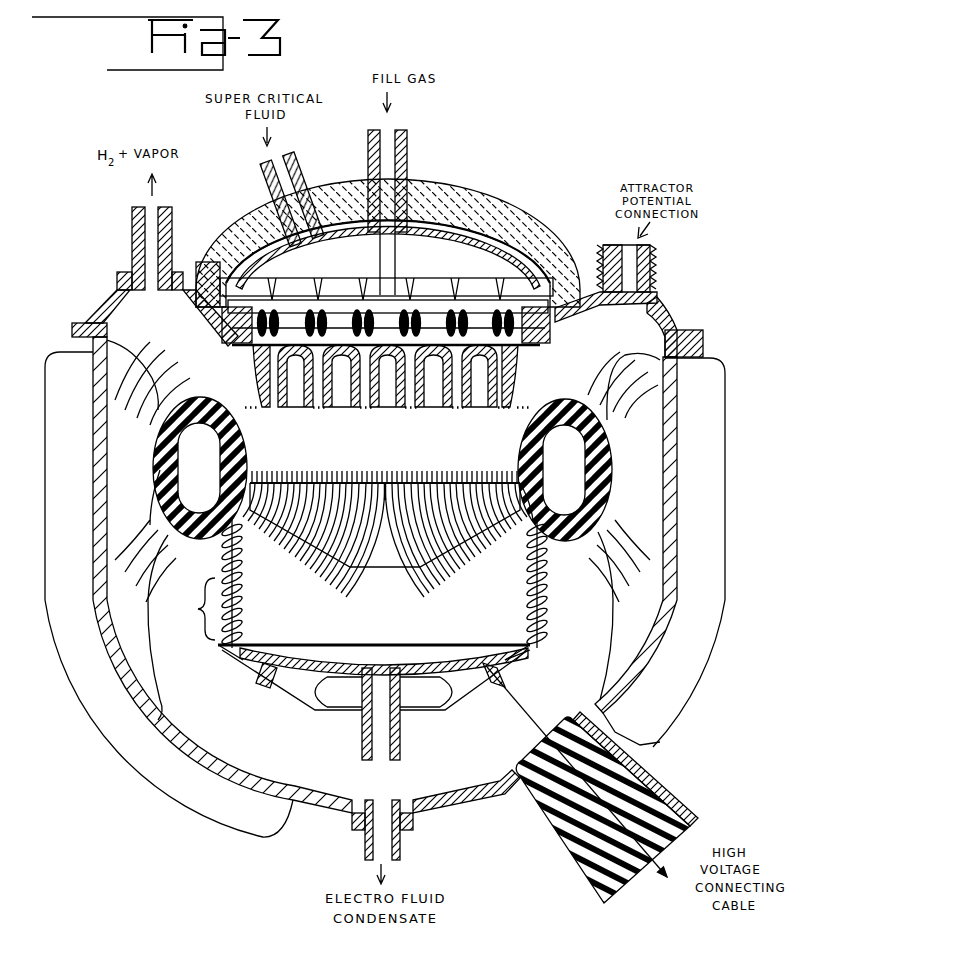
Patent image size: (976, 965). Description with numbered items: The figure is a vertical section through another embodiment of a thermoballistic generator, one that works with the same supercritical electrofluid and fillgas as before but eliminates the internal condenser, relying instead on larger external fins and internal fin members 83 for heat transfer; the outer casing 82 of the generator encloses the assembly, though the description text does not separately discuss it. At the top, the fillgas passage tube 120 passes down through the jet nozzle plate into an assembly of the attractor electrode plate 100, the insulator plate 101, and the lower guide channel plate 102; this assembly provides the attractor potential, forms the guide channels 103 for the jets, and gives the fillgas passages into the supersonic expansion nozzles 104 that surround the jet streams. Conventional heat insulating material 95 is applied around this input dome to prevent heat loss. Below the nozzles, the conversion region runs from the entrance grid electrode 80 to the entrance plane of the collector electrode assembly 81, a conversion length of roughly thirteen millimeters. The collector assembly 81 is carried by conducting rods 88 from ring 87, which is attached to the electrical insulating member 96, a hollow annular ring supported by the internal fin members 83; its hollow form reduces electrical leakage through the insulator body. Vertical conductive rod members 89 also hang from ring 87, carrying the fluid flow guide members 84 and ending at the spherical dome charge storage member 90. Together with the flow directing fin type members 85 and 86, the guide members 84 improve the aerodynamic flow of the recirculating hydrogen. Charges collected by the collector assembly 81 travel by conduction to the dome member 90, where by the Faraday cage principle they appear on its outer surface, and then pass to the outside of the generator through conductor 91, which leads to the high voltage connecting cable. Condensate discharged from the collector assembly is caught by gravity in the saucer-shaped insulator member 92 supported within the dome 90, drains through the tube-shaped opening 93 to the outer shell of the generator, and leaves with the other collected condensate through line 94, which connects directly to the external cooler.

The entrance grid electrode 80 is at (336, 412).
The collector electrode assembly 81 is at (405, 480).
The outer casing 82 is at (52, 640).
The internal fin members 83 is at (170, 688).
The fluid flow guide members 84 is at (198, 609).
The flow directing fin type member 85 is at (142, 582).
The flow directing fin type member 86 is at (160, 352).
The ring 87 is at (520, 535).
The conducting rods 88 is at (348, 483).
The vertical conductive rod members 89 is at (244, 606).
The spherical dome charge storage member 90 is at (527, 660).
The conductor 91 is at (518, 718).
The saucer-shaped insulator member 92 is at (360, 650).
The tube-shaped opening 93 is at (362, 734).
The line 94 is at (362, 846).
The heat insulating material 95 is at (478, 212).
The electrical insulating member 96 is at (605, 488).
The attractor electrode plate 100 is at (480, 314).
The insulator plate 101 is at (500, 314).
The lower guide channel plate 102 is at (430, 330).
The guide channels 103 is at (312, 330).
The supersonic expansion nozzles 104 is at (272, 392).
The fillgas passage tube 120 is at (396, 268).